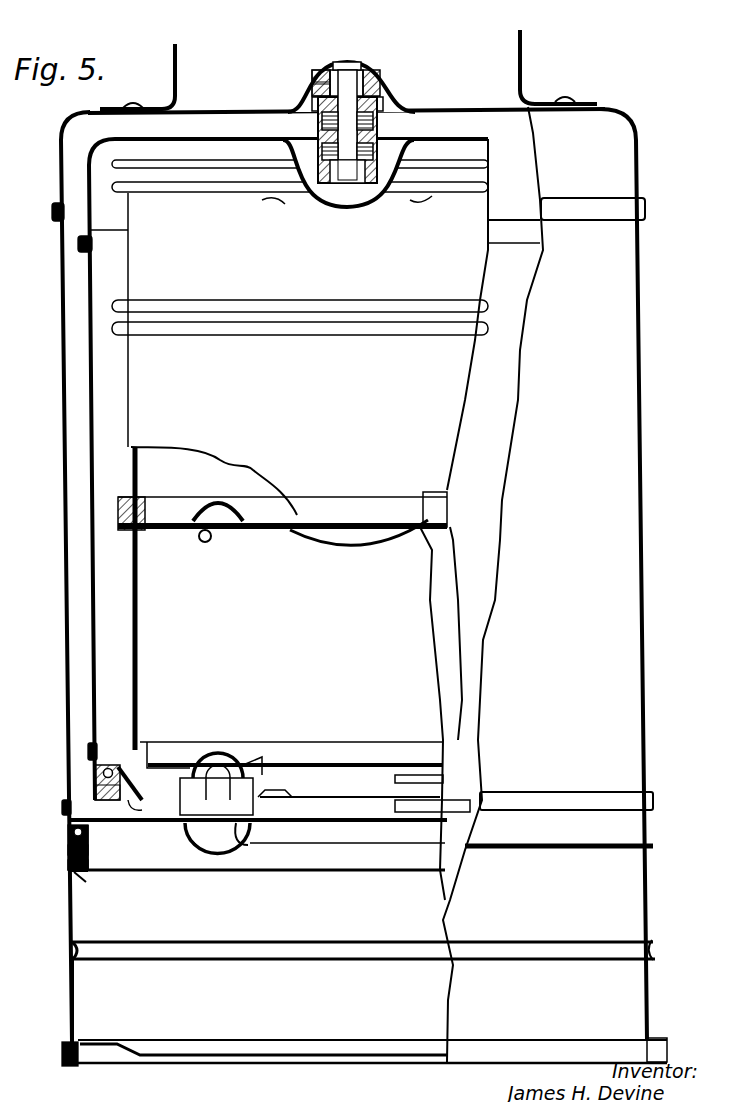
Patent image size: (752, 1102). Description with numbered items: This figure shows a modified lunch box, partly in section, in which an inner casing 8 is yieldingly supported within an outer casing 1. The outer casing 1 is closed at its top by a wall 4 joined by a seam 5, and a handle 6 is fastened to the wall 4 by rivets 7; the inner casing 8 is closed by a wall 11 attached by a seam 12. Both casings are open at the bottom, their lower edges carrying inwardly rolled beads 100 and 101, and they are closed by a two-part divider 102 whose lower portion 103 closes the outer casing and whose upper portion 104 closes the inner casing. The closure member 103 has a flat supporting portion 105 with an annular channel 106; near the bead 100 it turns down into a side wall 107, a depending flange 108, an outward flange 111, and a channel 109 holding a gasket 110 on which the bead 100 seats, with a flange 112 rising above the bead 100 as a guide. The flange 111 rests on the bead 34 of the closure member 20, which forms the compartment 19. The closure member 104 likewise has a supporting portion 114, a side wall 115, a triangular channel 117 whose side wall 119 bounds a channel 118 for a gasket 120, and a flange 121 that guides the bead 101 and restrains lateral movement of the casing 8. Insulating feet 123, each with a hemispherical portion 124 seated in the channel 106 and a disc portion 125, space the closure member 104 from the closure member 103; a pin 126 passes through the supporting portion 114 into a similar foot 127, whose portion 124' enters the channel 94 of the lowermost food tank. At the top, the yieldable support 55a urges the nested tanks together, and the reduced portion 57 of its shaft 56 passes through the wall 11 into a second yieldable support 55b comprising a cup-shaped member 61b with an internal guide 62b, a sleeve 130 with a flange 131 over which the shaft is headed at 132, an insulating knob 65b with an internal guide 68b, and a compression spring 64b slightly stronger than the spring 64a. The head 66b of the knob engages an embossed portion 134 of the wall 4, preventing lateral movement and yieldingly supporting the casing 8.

The outer casing 1 is at (62, 470).
The wall 4 is at (188, 112).
The seam 5 is at (54, 212).
The handle 6 is at (178, 62).
The rivets 7 is at (135, 104).
The inner casing 8 is at (91, 420).
The wall 11 is at (229, 138).
The seam 12 is at (80, 243).
The compartment 19 is at (212, 1033).
The closure member 20 is at (70, 981).
The bead 34 is at (70, 873).
The yieldable support 55a is at (316, 172).
The second yieldable support 55b is at (395, 106).
The shaft 56 is at (348, 185).
The reduced portion 57 is at (340, 150).
The cup-shaped member 61b is at (322, 122).
The internal guide 62b is at (375, 122).
The compression spring 64a is at (375, 171).
The compression spring 64b is at (384, 115).
The insulating knob 65b is at (390, 98).
The head 66b is at (383, 70).
The internal guide 68b is at (364, 69).
The channel 94 is at (226, 765).
The inwardly rolled bead 100 is at (70, 835).
The inwardly rolled bead 101 is at (95, 779).
The two-part divider 102 is at (325, 871).
The lower portion 103 is at (115, 871).
The upper portion 104 is at (323, 763).
The supporting portion 105 is at (343, 822).
The annular channel 106 is at (240, 845).
The side wall 107 is at (84, 836).
The depending flange 108 is at (80, 882).
The channel 109 is at (70, 850).
The gasket 110 is at (92, 847).
The flange 111 is at (68, 862).
The flange 112 is at (62, 808).
The supporting portion 114 is at (398, 812).
The side wall 115 is at (135, 783).
The triangularly shaped channel 117 is at (148, 809).
The channel 118 is at (113, 768).
The side wall 119 is at (168, 756).
The gasket 120 is at (95, 794).
The flange 121 is at (88, 750).
The feet 123 is at (278, 814).
The hemispherical portion 124 is at (209, 845).
The portion 124' is at (214, 746).
The disc portion 125 is at (194, 830).
The pin 126 is at (245, 765).
The foot 127 is at (256, 766).
The sleeve 130 is at (313, 97).
The annular flange 131 is at (313, 88).
The headed end 132 is at (330, 69).
The embossed portion 134 is at (347, 61).